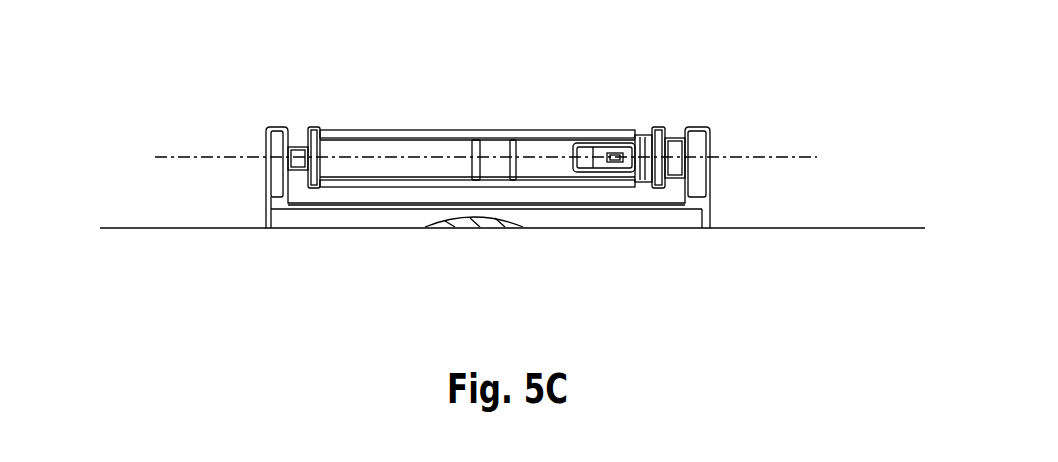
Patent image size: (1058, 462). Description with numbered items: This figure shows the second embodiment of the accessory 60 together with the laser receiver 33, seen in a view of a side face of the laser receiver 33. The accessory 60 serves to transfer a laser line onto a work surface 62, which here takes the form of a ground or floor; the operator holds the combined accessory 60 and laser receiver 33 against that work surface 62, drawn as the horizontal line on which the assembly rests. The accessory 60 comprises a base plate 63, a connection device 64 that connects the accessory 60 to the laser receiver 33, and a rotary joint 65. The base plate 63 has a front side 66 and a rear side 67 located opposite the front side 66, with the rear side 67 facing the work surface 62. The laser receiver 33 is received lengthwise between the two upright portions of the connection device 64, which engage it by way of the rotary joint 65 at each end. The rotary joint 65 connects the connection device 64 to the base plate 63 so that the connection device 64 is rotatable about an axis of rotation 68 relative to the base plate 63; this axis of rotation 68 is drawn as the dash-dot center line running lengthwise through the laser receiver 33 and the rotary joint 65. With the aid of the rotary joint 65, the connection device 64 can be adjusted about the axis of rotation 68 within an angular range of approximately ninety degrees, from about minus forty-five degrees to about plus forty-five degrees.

The laser receiver 33 is at (488, 104).
The accessory 60 is at (163, 108).
The work surface 62 is at (853, 219).
The base plate 63 is at (588, 222).
The connection device 64 is at (258, 127).
The rotary joint 65 is at (299, 126).
The front side 66 is at (394, 203).
The rear side 67 is at (372, 238).
The axis of rotation 68 is at (185, 160).